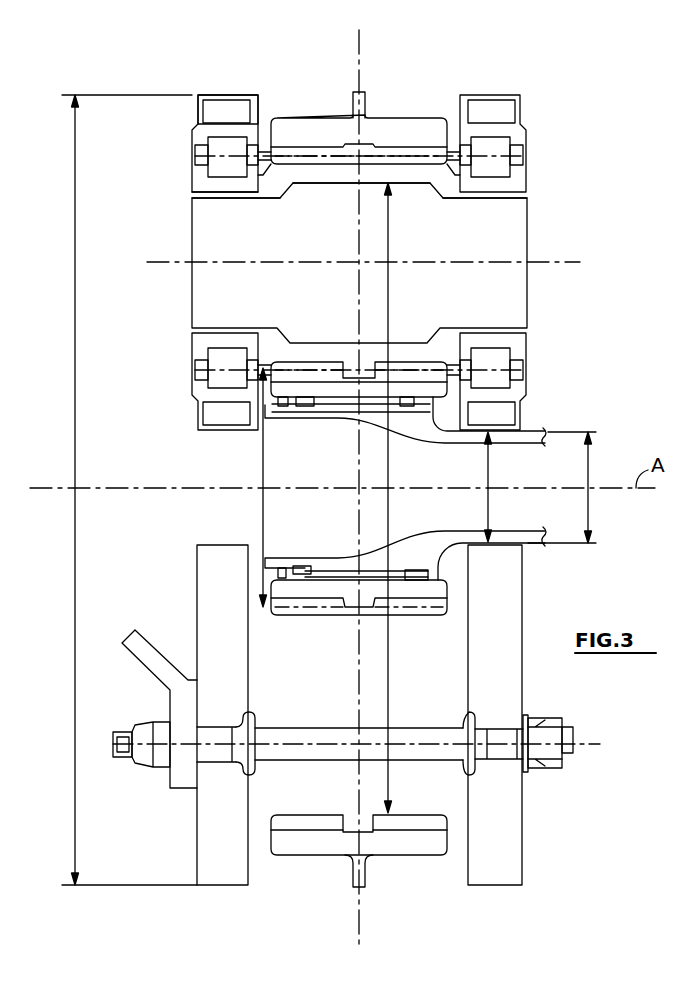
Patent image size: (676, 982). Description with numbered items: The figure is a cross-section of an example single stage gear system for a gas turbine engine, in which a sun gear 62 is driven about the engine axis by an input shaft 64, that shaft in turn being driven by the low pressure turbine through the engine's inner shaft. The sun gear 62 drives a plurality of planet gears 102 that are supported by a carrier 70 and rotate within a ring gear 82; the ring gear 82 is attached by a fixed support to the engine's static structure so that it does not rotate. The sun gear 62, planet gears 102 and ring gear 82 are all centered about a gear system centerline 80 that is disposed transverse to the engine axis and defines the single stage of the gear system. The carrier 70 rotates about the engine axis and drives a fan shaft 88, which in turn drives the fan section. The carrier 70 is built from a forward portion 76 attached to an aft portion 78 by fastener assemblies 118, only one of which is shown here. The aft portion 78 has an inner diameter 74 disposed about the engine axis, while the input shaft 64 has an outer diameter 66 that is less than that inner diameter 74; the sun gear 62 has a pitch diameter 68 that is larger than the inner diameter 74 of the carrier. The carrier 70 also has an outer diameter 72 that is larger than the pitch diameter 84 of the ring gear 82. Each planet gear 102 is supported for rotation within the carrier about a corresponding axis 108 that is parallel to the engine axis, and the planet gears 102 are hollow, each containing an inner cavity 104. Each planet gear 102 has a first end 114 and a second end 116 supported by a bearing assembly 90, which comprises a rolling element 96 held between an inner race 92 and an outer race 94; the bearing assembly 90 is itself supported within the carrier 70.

The sun gear 62 is at (330, 385).
The input shaft 64 is at (516, 443).
The outer diameter 66 is at (490, 507).
The pitch diameter 68 is at (262, 470).
The carrier 70 is at (178, 851).
The outer diameter 72 is at (80, 228).
The inner diameter 74 is at (590, 466).
The forward portion 76 is at (215, 806).
The aft portion 78 is at (520, 820).
The gear system centerline 80 is at (359, 58).
The ring gear 82 is at (393, 128).
The pitch diameter 84 is at (390, 676).
The fan shaft 88 is at (152, 655).
The bearing assembly 90 is at (182, 173).
The inner race 92 is at (248, 193).
The outer race 94 is at (220, 128).
The rolling element 96 is at (222, 166).
The planet gears 102 is at (405, 188).
The inner cavity 104 is at (428, 292).
The axis 108 is at (440, 262).
The first end 114 is at (243, 200).
The second end 116 is at (500, 204).
The fastener assemblies 118 is at (408, 728).